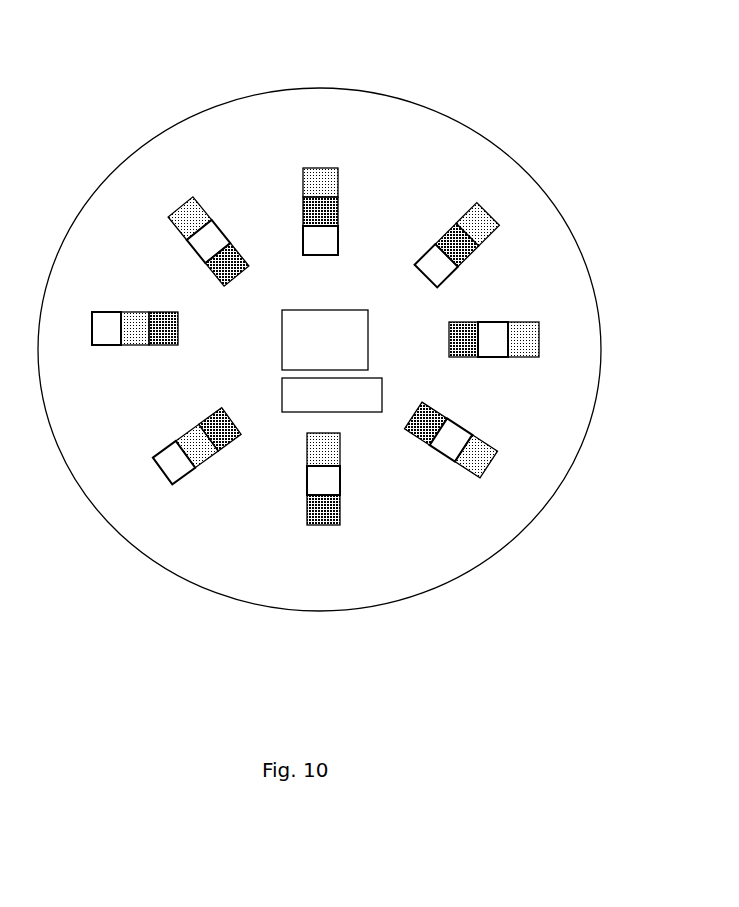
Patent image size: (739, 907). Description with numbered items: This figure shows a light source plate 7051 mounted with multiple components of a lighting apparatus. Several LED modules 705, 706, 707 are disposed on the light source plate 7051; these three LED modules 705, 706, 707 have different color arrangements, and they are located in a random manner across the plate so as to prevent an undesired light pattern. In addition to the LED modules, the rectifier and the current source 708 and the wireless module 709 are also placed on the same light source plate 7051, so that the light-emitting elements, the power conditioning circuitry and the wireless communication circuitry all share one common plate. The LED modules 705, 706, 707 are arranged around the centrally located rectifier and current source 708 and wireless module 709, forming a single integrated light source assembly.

The light source plate 7051 is at (483, 138).
The LED module 705 is at (200, 198).
The LED module 706 is at (330, 175).
The LED module 707 is at (208, 458).
The rectifier and current source 708 is at (282, 341).
The wireless module 709 is at (287, 412).